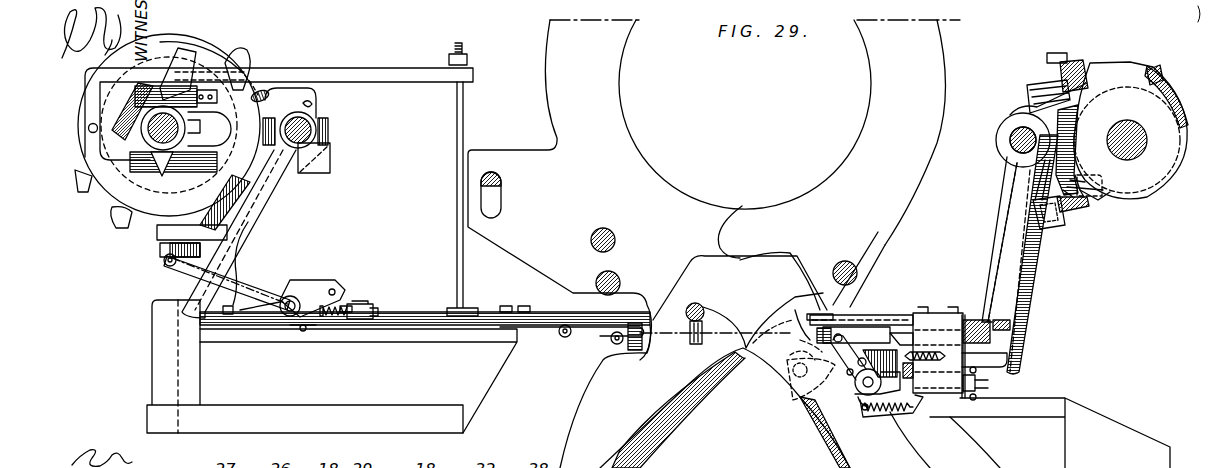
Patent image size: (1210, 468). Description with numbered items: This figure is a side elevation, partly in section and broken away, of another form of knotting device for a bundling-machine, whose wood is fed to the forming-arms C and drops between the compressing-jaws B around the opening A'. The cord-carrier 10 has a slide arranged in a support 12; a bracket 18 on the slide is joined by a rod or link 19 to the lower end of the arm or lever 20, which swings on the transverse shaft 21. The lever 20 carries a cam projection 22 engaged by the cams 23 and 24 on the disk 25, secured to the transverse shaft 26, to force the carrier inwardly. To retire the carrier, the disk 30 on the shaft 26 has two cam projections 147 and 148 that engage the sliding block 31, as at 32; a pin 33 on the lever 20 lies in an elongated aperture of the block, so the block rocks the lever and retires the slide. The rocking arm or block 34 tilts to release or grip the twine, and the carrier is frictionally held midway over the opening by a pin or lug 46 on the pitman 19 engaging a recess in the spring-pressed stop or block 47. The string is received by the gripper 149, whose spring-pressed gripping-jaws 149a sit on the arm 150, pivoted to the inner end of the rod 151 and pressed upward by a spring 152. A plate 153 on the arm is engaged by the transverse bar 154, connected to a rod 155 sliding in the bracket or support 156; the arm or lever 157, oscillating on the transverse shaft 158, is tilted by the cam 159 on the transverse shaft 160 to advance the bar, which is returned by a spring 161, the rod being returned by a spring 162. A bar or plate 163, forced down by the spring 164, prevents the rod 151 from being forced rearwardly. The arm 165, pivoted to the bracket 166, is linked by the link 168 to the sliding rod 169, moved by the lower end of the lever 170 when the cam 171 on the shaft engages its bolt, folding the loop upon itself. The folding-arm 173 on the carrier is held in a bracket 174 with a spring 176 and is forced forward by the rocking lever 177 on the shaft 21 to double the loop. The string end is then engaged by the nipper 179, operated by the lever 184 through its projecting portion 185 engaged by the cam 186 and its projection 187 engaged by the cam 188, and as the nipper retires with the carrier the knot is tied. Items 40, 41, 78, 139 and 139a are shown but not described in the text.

The cord-carrier 10 is at (425, 395).
The support 12 is at (398, 366).
The bracket 18 is at (300, 297).
The rod or link (pitman) 19 is at (233, 290).
The arm or lever 20 is at (233, 203).
The transverse shaft 21 is at (303, 130).
The cam projection 22 is at (262, 96).
The cam 23 is at (227, 63).
The cam 24 is at (126, 224).
The disk 25 is at (150, 205).
The transverse shaft 26 is at (150, 135).
The disk 30 is at (140, 128).
The sliding block 31 is at (320, 167).
The engaging point of sliding block 32 is at (190, 88).
The pin 33 is at (317, 108).
The rocking arm or block 34 is at (293, 283).
The post 40 is at (456, 113).
The cross bar 41 is at (335, 75).
The pin or lug 46 is at (167, 263).
The spring-pressed stop or block 47 is at (303, 330).
The tab 78 is at (80, 188).
The stop screw 139 is at (690, 312).
The cam surface 139a is at (763, 315).
The cam projection 147 is at (183, 120).
The cam projection 148 is at (165, 170).
The gripper 149 is at (816, 376).
The spring-pressed gripping-jaws 149a is at (786, 349).
The arm 150 is at (850, 365).
The rod 151 is at (940, 387).
The spring 152 is at (868, 398).
The plate 153 is at (900, 355).
The bar 154 is at (905, 372).
The rod 155 is at (972, 375).
The bracket or support 156 is at (958, 440).
The arm or lever 157 is at (1013, 330).
The transverse shaft 158 is at (1017, 146).
The cam 159 is at (1172, 100).
The transverse shaft 160 is at (1137, 152).
The spring 161 is at (963, 343).
The spring 162 is at (915, 405).
The bar or plate 163 is at (1050, 433).
The spring 164 is at (976, 396).
The arm 165 is at (781, 302).
The bracket 166 is at (897, 327).
The link 168 is at (857, 333).
The sliding rod 169 is at (908, 337).
The arm or lever 170 is at (1013, 302).
The cam 171 is at (1153, 68).
The lever or arm (folding-arm) 173 is at (543, 311).
The bracket 174 is at (363, 306).
The spring 176 is at (333, 312).
The rocking lever 177 is at (240, 232).
The nipper 179 is at (832, 315).
The lever 184 is at (987, 247).
The projecting portion 185 is at (1010, 115).
The cam 186 is at (1098, 70).
The projection 187 is at (1057, 228).
The cam 188 is at (1100, 196).
The opening A' is at (725, 408).
The compressing-jaws B is at (655, 447).
The forming-arms C is at (652, 165).